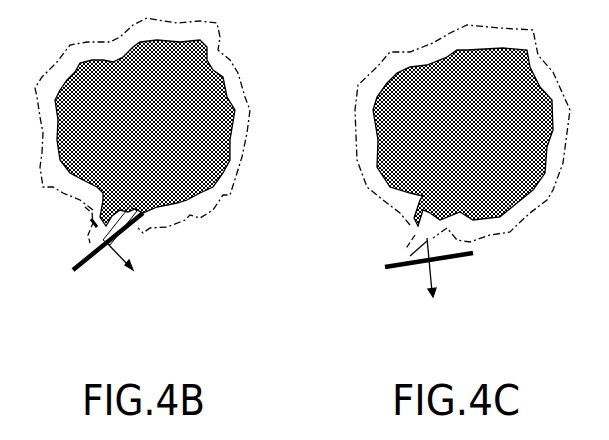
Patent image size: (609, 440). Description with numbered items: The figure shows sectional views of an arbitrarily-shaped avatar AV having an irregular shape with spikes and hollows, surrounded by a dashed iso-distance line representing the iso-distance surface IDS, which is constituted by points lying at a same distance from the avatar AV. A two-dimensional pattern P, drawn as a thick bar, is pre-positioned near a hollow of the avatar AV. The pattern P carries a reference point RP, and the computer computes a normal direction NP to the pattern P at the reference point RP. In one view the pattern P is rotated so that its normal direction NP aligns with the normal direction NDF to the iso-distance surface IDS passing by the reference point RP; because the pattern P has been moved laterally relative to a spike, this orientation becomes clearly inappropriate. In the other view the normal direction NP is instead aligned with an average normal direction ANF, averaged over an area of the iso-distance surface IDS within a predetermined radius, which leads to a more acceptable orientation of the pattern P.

In FIG. 4B, the avatar AV is at (145, 133).
In FIG. 4C, the avatar AV is at (463, 137).
In FIG. 4B, the iso-distance surface IDS is at (230, 195).
In FIG. 4C, the iso-distance surface IDS is at (355, 108).
In FIG. 4B, the pattern P is at (82, 266).
In FIG. 4C, the pattern P is at (397, 272).
In FIG. 4B, the normal direction to the pattern NP is at (93, 226).
In FIG. 4C, the normal direction to the pattern NP is at (428, 242).
In FIG. 4B, the reference point RP is at (118, 243).
In FIG. 4C, the reference point RP is at (418, 267).
In FIG. 4B, the normal direction NDF is at (122, 255).
In FIG. 4C, the average normal direction ANF is at (435, 276).